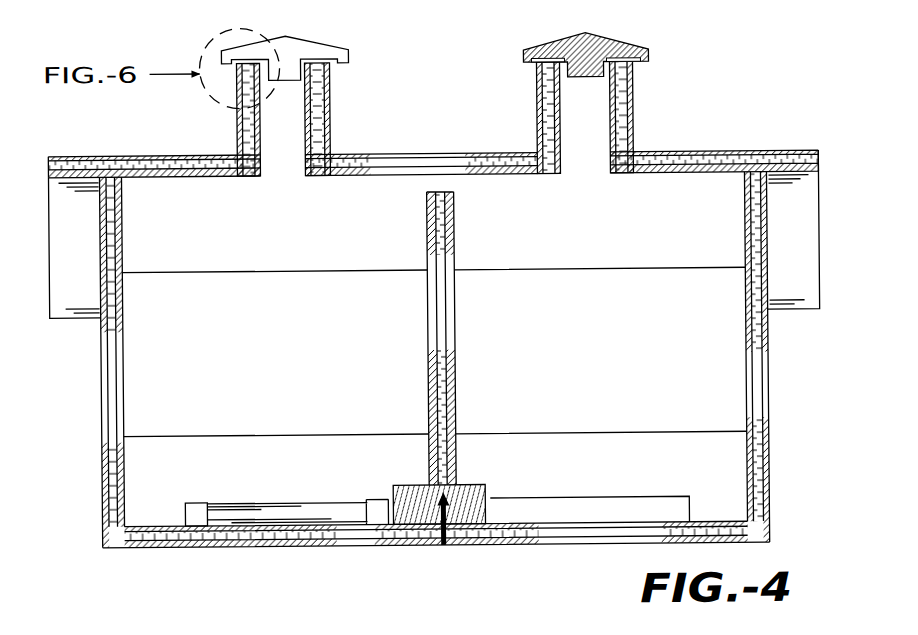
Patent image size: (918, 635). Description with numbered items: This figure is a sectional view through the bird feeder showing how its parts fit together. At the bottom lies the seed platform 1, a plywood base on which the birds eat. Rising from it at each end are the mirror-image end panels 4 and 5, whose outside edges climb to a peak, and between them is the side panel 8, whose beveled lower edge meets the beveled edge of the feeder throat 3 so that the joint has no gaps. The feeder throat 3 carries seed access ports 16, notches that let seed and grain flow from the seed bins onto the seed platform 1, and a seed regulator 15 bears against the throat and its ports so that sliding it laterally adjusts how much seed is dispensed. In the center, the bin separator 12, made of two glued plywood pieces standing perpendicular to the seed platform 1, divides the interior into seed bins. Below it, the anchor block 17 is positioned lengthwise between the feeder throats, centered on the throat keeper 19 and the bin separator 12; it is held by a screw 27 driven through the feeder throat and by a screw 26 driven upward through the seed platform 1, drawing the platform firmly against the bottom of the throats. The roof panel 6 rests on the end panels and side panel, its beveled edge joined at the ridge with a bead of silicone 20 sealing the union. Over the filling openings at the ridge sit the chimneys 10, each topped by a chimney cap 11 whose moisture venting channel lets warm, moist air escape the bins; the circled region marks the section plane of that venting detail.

The seed platform 1 is at (203, 547).
The feeder throat 3 is at (283, 462).
The end panel 4 is at (768, 392).
The end panel 5 is at (101, 387).
The roof panel 6 is at (50, 288).
The side panel 8 is at (285, 348).
The chimney 10 is at (334, 100).
The chimney cap 11 is at (353, 50).
The bin separator 12 is at (458, 312).
The seed regulator 15 is at (286, 515).
The seed access port 16 is at (197, 512).
The anchor block 17 is at (477, 484).
The throat keeper 19 is at (458, 457).
The silicone 20 is at (188, 165).
The screw 26 is at (443, 548).
The screw 27 is at (250, 58).